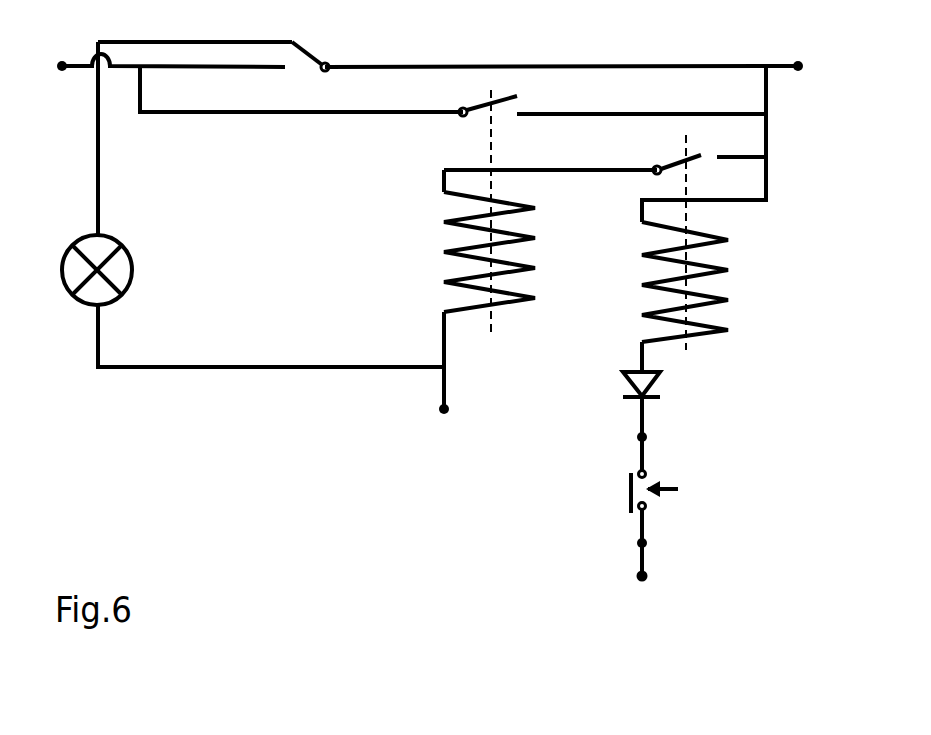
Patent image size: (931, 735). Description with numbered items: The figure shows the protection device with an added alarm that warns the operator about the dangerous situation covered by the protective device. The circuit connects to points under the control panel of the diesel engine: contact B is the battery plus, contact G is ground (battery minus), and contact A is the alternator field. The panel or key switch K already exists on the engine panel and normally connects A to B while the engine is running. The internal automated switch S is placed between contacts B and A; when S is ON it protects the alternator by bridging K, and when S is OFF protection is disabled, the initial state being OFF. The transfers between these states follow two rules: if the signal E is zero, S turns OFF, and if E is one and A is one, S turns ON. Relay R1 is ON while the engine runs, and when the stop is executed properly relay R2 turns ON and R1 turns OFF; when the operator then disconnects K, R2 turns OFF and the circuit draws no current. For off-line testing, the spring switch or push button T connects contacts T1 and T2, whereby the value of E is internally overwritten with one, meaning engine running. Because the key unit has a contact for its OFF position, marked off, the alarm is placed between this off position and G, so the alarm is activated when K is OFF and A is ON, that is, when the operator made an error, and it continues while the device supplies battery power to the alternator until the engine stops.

The battery positive contact B is at (155, 67).
The alternator field contact A is at (581, 69).
The panel or key switch K is at (326, 46).
The OFF position contact of the key switch off is at (295, 18).
The internal automated switch S is at (500, 212).
The relay R1 is at (517, 252).
The relay R2 is at (715, 242).
The ground contact G is at (449, 434).
The test contact T1 is at (618, 443).
The spring switch or push button T is at (673, 492).
The test contact T2 is at (618, 545).
The engine running signal E is at (643, 599).
The element alarm is at (135, 291).